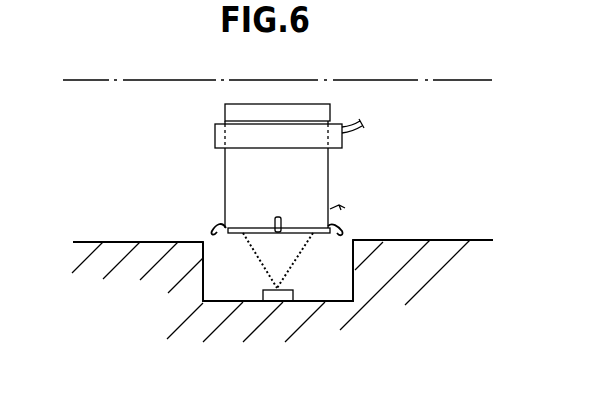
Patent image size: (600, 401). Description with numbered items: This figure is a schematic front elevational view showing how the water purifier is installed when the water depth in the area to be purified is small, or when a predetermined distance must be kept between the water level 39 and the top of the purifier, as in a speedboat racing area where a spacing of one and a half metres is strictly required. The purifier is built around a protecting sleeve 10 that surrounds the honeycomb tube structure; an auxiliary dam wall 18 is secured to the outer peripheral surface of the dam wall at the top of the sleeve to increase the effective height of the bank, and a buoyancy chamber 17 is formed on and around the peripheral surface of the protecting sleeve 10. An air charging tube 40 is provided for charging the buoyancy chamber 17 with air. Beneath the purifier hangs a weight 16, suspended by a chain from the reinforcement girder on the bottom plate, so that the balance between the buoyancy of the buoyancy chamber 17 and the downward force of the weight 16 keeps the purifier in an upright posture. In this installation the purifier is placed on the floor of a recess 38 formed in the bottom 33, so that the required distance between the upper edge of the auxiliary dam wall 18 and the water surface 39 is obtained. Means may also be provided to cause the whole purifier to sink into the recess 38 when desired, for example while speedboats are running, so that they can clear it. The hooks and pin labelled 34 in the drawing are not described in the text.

The protecting sleeve 10 is at (325, 183).
The weight 16 is at (275, 300).
The buoyancy chamber 17 is at (215, 140).
The auxiliary dam wall 18 is at (228, 112).
The bottom 33 is at (445, 238).
The fastening hooks / pin 34 is at (218, 230).
The recess 38 is at (345, 295).
The water level 39 is at (418, 80).
The air charging tube 40 is at (365, 124).